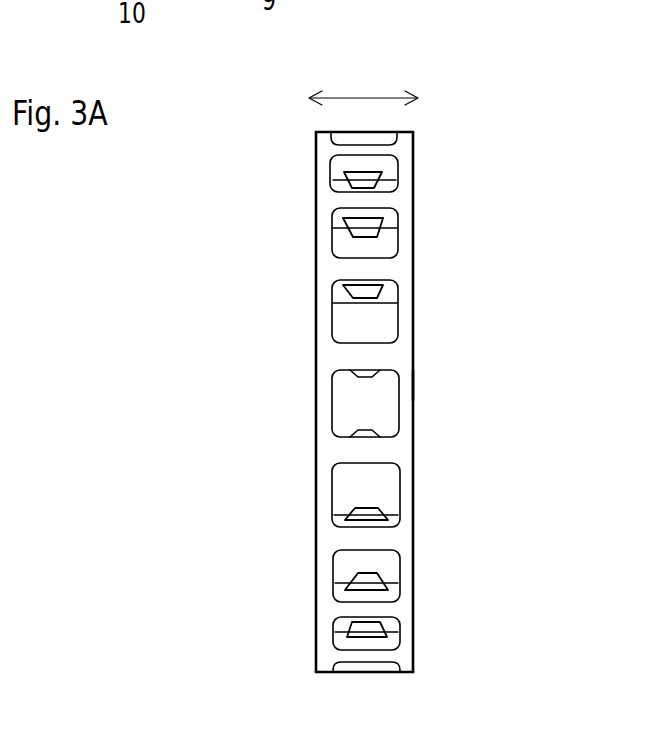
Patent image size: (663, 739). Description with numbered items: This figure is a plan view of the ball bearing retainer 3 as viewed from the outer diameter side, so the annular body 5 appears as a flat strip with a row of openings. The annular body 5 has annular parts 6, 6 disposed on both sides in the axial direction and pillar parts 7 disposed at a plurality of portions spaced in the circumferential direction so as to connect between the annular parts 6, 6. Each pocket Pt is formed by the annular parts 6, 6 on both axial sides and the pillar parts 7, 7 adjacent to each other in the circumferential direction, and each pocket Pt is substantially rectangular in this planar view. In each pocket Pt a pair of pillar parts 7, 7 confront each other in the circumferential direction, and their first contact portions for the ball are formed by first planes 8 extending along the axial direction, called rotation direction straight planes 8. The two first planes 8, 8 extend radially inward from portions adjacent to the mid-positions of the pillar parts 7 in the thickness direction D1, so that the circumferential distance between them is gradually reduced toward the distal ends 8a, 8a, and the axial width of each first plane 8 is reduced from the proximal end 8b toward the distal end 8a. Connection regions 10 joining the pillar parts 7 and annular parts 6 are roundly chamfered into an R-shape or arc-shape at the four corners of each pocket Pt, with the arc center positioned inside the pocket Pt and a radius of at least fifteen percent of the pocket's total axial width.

The retainer 3 is at (428, 239).
The annular body 5 is at (414, 383).
The annular part 6 is at (334, 410).
The pillar part 7 is at (358, 357).
The first plane 8 is at (345, 235).
The distal end 8a is at (363, 232).
The proximal end 8b is at (368, 216).
The connection region 10 is at (340, 484).
The pocket Pt is at (386, 325).
The thickness direction D1 is at (347, 95).